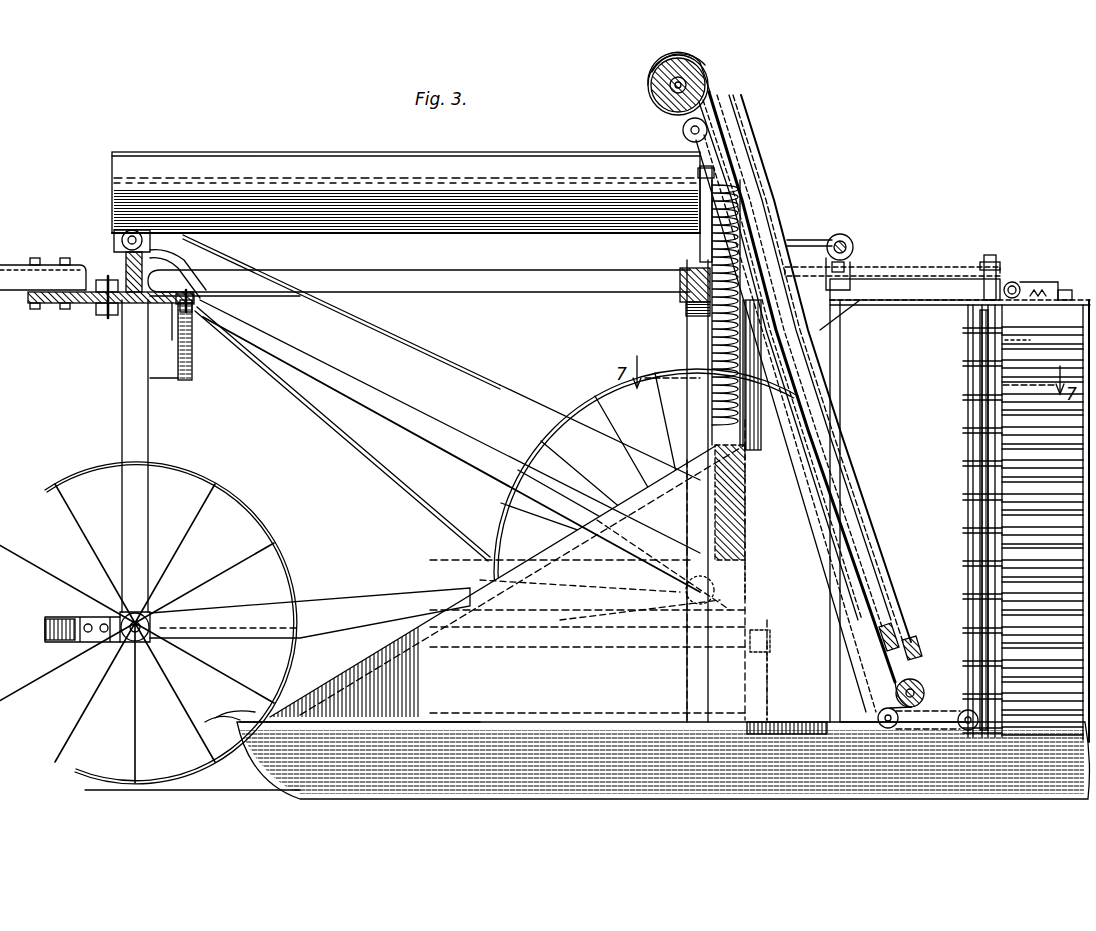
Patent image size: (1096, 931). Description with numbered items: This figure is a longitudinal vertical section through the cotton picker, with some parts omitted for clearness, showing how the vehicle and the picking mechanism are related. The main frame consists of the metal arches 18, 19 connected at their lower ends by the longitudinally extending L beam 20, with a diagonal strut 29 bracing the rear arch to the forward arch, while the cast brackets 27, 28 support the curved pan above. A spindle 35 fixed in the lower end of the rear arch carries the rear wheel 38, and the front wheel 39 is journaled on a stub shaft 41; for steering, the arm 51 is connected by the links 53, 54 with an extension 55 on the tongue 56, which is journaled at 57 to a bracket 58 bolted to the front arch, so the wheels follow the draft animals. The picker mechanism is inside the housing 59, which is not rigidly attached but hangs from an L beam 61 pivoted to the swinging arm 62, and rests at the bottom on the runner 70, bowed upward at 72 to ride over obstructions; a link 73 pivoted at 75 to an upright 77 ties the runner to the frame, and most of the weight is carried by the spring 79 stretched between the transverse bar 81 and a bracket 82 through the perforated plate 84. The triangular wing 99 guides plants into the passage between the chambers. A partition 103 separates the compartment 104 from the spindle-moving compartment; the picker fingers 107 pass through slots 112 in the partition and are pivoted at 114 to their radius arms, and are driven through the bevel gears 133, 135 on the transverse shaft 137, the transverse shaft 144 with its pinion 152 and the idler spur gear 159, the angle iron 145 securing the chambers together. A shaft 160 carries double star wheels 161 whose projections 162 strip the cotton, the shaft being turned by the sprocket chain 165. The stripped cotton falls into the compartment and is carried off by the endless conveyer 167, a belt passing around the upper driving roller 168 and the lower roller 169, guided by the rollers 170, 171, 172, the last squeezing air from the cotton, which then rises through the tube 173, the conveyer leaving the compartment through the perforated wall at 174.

The metal arch 18 is at (150, 412).
The metal arch 19 is at (377, 402).
The longitudinally extending L beam 20 is at (448, 156).
The cast bracket 27 is at (152, 249).
The cast bracket 28 is at (688, 257).
The diagonal strut 29 is at (441, 398).
The journal or spindle 35 is at (710, 600).
The rear wheel 38 is at (697, 572).
The front wheel 39 is at (92, 470).
The stub shaft 41 is at (134, 612).
The arm 51 is at (165, 380).
The link 53 is at (194, 354).
The link 54 is at (205, 300).
The extension 55 is at (161, 326).
The tongue 56 is at (43, 294).
The journal 57 is at (94, 280).
The bracket 58 is at (143, 273).
The housing or chamber 59 is at (915, 289).
The L beam 61 is at (754, 372).
The arm 62 is at (444, 272).
The skid or runner 70 is at (374, 592).
The upwardly bowed forward end 72 is at (242, 756).
The longitudinally extending link 73 is at (322, 636).
The pivot 75 is at (772, 632).
The upright 77 is at (772, 672).
The spring 79 is at (710, 420).
The transverse bar 81 is at (698, 173).
The bracket 82 is at (745, 585).
The perforated plate 84 is at (745, 555).
The triangular wing 99 is at (533, 570).
The partition 103 is at (822, 330).
The compartment 104 is at (960, 398).
The picker finger 107 is at (1010, 468).
The horizontal slot 112 is at (968, 588).
The pivot 114 is at (1035, 337).
The bevel gear 133 is at (856, 246).
The bevel gear 135 is at (836, 236).
The transverse shaft 137 is at (848, 240).
The transverse shaft 144 is at (1013, 282).
The angle iron 145 is at (1066, 296).
The pinion 152 is at (1040, 282).
The idler spur gear 159 is at (1045, 284).
The shaft 160 is at (990, 256).
The double star wheel 161 is at (968, 366).
The spoke or projection 162 is at (966, 460).
The sprocket chain 165 is at (918, 266).
The endless conveyer 167 is at (876, 702).
The roller 168 is at (708, 70).
The roller 169 is at (962, 732).
The roller 170 is at (682, 137).
The roller 171 is at (893, 730).
The roller 172 is at (918, 686).
The tube 173 is at (886, 556).
The perforation point 174 is at (842, 392).